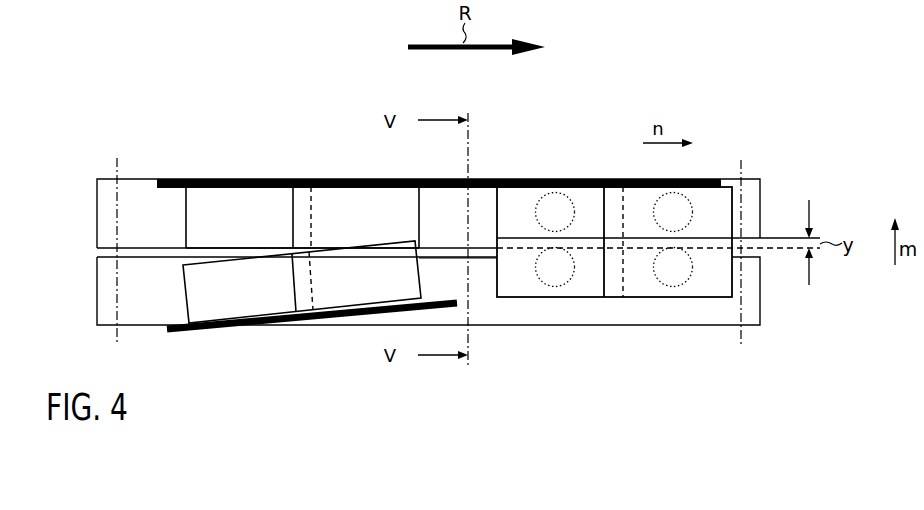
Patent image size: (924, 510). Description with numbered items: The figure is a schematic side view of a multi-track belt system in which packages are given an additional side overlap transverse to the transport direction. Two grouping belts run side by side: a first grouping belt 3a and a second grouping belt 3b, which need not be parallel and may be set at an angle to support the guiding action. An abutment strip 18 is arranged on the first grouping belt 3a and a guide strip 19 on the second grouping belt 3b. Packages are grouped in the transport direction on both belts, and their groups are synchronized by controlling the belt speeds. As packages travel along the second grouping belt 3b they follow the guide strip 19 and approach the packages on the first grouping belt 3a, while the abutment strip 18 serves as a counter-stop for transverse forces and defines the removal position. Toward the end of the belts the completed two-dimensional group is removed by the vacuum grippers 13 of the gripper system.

The first grouping belt 3a is at (103, 202).
The second grouping belt 3b is at (103, 287).
The vacuum grippers 13 is at (680, 285).
The abutment strip 18 is at (272, 178).
The guide strip 19 is at (286, 327).